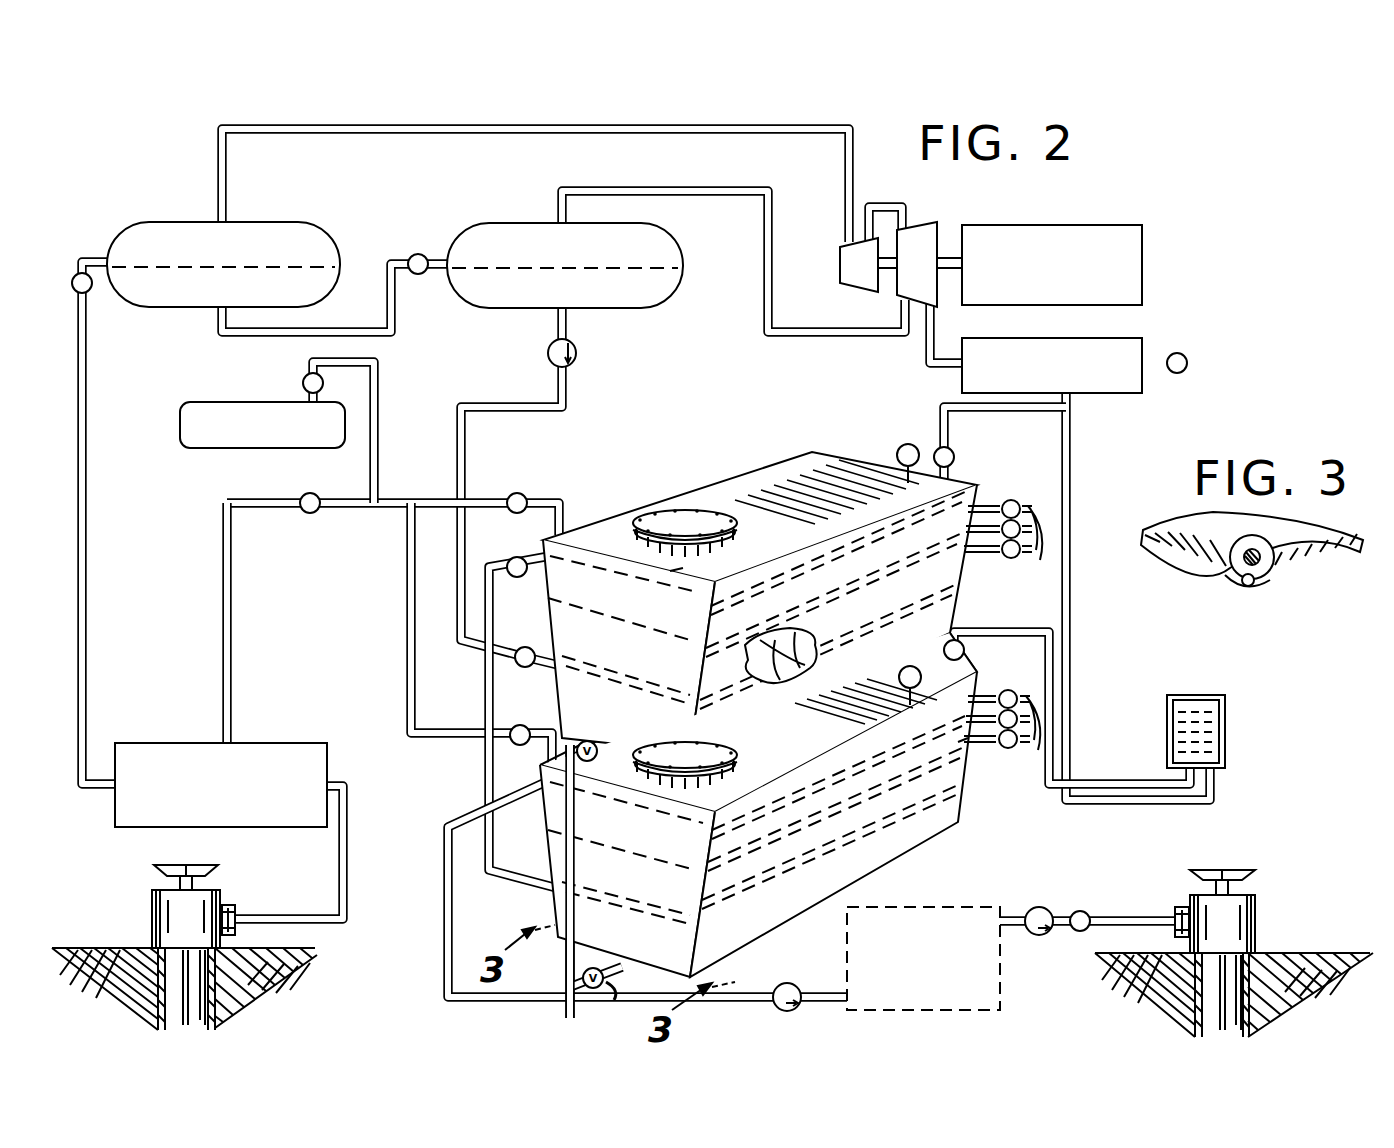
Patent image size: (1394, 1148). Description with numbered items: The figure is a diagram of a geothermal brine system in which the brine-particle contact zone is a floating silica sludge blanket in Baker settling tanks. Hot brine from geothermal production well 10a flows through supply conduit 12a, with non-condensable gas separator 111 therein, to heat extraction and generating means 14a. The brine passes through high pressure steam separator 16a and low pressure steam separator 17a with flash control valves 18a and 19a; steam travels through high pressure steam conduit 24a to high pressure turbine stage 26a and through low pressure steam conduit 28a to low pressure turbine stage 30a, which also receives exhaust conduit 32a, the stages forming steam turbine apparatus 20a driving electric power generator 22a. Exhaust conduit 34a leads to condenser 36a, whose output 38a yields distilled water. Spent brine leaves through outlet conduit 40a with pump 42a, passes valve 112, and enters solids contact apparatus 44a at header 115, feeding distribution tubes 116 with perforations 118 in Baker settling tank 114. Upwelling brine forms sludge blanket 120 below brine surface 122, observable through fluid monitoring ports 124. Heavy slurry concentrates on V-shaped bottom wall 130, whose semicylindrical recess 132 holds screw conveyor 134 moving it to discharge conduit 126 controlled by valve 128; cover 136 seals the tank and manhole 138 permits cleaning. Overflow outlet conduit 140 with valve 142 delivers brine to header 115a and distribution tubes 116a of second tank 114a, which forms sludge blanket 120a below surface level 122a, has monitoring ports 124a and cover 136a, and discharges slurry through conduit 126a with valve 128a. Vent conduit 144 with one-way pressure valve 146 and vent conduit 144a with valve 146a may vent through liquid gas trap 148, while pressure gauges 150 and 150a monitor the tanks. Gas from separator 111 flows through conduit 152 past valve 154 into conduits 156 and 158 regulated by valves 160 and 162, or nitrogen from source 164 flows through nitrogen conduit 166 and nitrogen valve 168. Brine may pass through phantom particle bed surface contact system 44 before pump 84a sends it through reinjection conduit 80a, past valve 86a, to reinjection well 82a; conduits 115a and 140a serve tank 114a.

In FIG. 2, the geothermal production well 10a is at (145, 921).
In FIG. 2, the supply conduit 12a is at (88, 545).
In FIG. 2, the heat extraction and generating means 14a is at (205, 211).
In FIG. 2, the high pressure steam separator 16a is at (160, 310).
In FIG. 2, the low pressure steam separator 17a is at (500, 308).
In FIG. 2, the flash control valve 18a is at (72, 280).
In FIG. 2, the flash control valve 19a is at (418, 254).
In FIG. 2, the steam turbine apparatus 20a is at (893, 298).
In FIG. 2, the electric power generator 22a is at (1048, 224).
In FIG. 2, the high pressure steam conduit 24a is at (400, 138).
In FIG. 2, the high pressure condensing steam turbine stage 26a is at (835, 262).
In FIG. 2, the low pressure steam conduit 28a is at (680, 196).
In FIG. 2, the low pressure condensing turbine stage 30a is at (925, 222).
In FIG. 2, the exhaust conduit 32a is at (886, 207).
In FIG. 2, the exhaust conduit 34a is at (922, 357).
In FIG. 2, the condenser 36a is at (1095, 393).
In FIG. 2, the condenser output 38a is at (1185, 372).
In FIG. 2, the outlet conduit 40a is at (567, 407).
In FIG. 2, the pump 42a is at (576, 353).
In FIG. 2, the particle bed surface contact system 44 is at (1002, 996).
In FIG. 2, the solids contact apparatus 44a is at (724, 486).
In FIG. 2, the reinjection conduit 80a is at (1145, 917).
In FIG. 2, the reinjection well 82a is at (1262, 903).
In FIG. 2, the pump 84a is at (1040, 936).
In FIG. 2, the valve 86a is at (1085, 930).
In FIG. 2, the non-condensable gas separator 111 is at (285, 743).
In FIG. 2, the valve 112 is at (520, 648).
In FIG. 2, the Baker settling tank 114 is at (760, 593).
In FIG. 2, the second Baker settling tank 114a is at (799, 805).
In FIG. 2, the header 115 is at (640, 690).
In FIG. 2, the header 115a is at (640, 912).
In FIG. 2, the distribution tubes 116 is at (645, 668).
In FIG. 2, the distribution tubes 116a is at (648, 882).
In FIG. 2, the perforations 118 is at (787, 663).
In FIG. 2, the sludge blanket 120 is at (618, 612).
In FIG. 2, the sludge blanket 120a is at (963, 775).
In FIG. 2, the brine surface 122 is at (686, 566).
In FIG. 2, the brine surface level 122a is at (960, 748).
In FIG. 2, the fluid monitoring ports 124 is at (1009, 546).
In FIG. 2, the fluid monitoring ports 124a is at (1005, 708).
In FIG. 2, the discharge conduit 126 is at (600, 745).
In FIG. 2, the discharge conduit 126a is at (612, 1002).
In FIG. 2, the valve 128 is at (590, 735).
In FIG. 2, the valve 128a is at (582, 978).
In FIG. 3, the bottom wall 130 is at (1305, 560).
In FIG. 3, the semicylindrical longitudinal recess 132 is at (1252, 588).
In FIG. 3, the screw conveyor 134 is at (1262, 545).
In FIG. 2, the cover 136 is at (827, 492).
In FIG. 2, the cover 136a is at (848, 721).
In FIG. 2, the manhole 138 is at (665, 513).
In FIG. 2, the overflow outlet conduit 140 is at (493, 598).
In FIG. 2, the conduit 140a is at (453, 910).
In FIG. 2, the valve 142 is at (515, 556).
In FIG. 2, the vent conduit 144 is at (1002, 412).
In FIG. 2, the vent conduit 144a is at (990, 627).
In FIG. 2, the one-way pressure valve 146 is at (955, 457).
In FIG. 2, the one-way valve 146a is at (965, 650).
In FIG. 2, the liquid gas trap 148 is at (1230, 715).
In FIG. 2, the pressure gauge 150 is at (898, 448).
In FIG. 2, the pressure gauge 150a is at (899, 672).
In FIG. 2, the non-condensable gas conduit 152 is at (232, 620).
In FIG. 2, the valve 154 is at (312, 513).
In FIG. 2, the conduit 156 is at (478, 495).
In FIG. 2, the conduit 158 is at (415, 680).
In FIG. 2, the valve 160 is at (538, 488).
In FIG. 2, the valve 162 is at (520, 724).
In FIG. 2, the source of supply of nitrogen 164 is at (240, 390).
In FIG. 2, the nitrogen conduit 166 is at (378, 400).
In FIG. 2, the nitrogen valve 168 is at (304, 378).